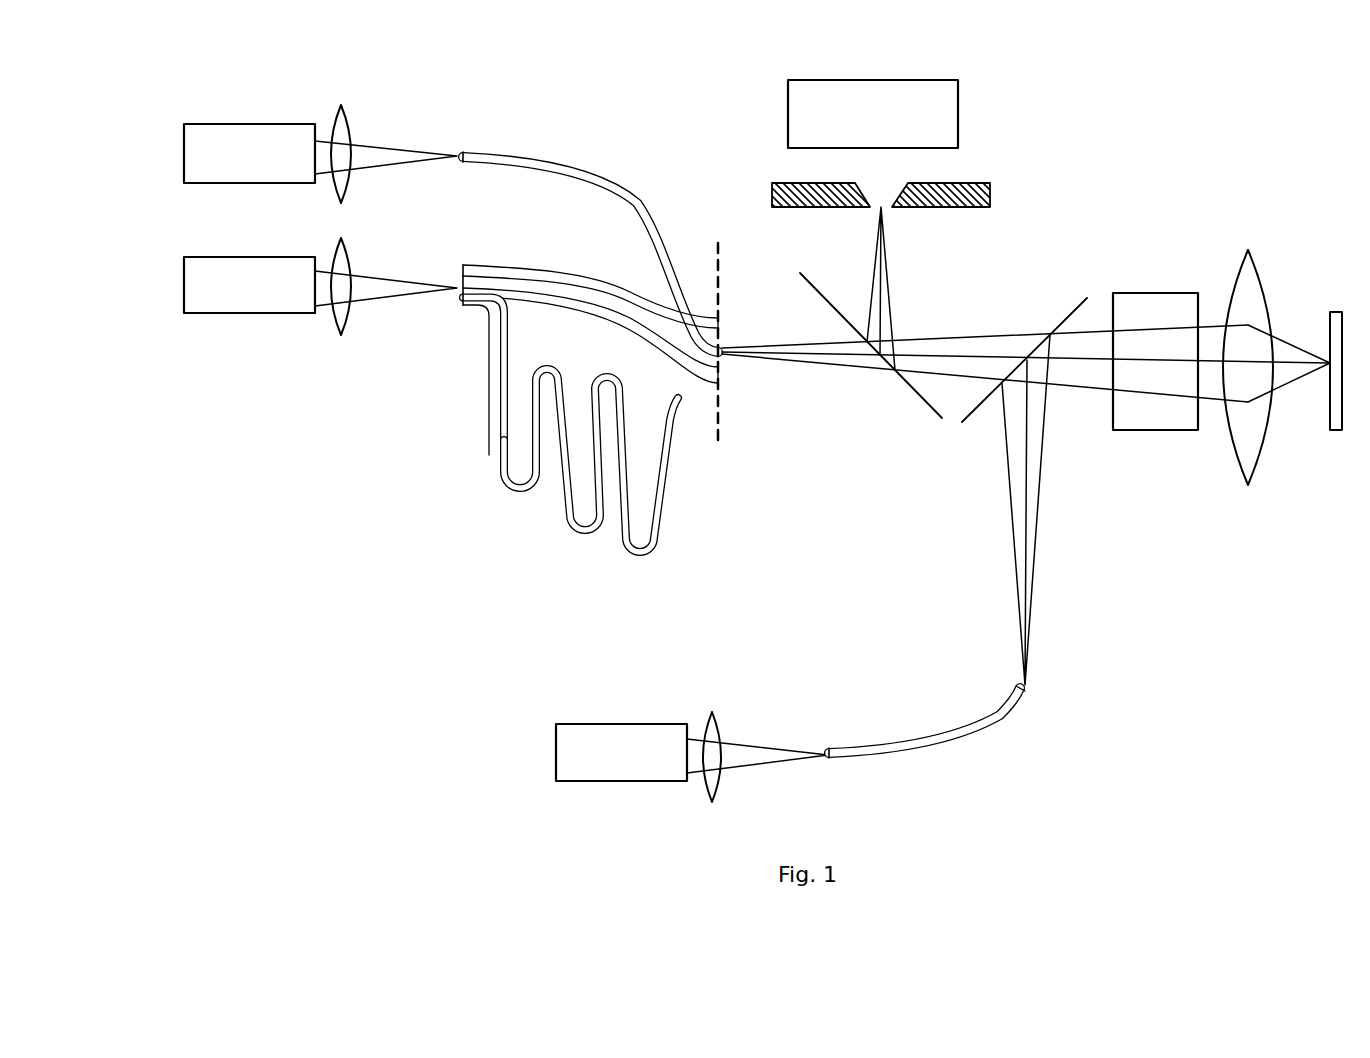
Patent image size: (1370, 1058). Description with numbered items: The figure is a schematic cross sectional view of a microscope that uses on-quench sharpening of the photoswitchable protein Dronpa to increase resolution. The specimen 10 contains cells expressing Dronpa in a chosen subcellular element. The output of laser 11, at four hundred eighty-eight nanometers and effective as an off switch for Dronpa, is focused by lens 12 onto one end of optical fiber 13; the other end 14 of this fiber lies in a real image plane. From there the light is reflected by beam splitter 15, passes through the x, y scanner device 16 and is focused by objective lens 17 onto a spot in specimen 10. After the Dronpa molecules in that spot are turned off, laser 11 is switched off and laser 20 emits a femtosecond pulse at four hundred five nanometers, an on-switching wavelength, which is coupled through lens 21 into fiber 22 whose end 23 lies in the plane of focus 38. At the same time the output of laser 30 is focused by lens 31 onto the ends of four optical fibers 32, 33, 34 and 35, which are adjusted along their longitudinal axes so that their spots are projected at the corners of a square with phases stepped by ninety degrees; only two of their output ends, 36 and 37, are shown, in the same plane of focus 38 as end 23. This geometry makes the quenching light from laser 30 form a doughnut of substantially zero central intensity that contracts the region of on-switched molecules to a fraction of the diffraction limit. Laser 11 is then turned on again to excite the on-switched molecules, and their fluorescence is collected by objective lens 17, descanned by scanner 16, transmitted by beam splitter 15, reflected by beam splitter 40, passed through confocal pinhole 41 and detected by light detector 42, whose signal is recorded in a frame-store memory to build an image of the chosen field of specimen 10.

The specimen 10 is at (1342, 310).
The laser 11 is at (588, 724).
The lens 12 is at (716, 712).
The optical fiber 13 is at (928, 757).
The other end of optical fiber 14 is at (1030, 677).
The beam splitter 15 is at (1070, 312).
The x, y scanner device 16 is at (1140, 430).
The objective lens 17 is at (1262, 268).
The laser 20 is at (216, 124).
The lens 21 is at (343, 106).
The fiber 22 is at (528, 152).
The end of fiber 23 is at (726, 357).
The laser 30 is at (200, 257).
The lens 31 is at (343, 238).
The optical fiber 32 is at (576, 272).
The optical fiber 33 is at (577, 308).
The optical fiber 34 is at (488, 335).
The optical fiber 35 is at (655, 545).
The fiber end 36 is at (722, 321).
The fiber end 37 is at (722, 380).
The plane of focus 38 is at (716, 243).
The beam splitter 40 is at (915, 405).
The confocal pinhole 41 is at (960, 183).
The light detector 42 is at (905, 80).